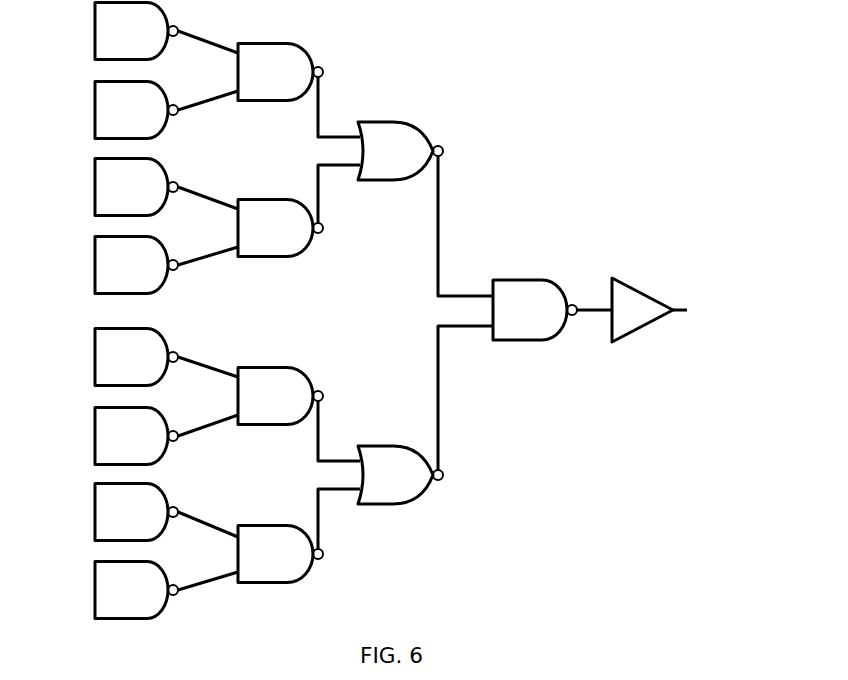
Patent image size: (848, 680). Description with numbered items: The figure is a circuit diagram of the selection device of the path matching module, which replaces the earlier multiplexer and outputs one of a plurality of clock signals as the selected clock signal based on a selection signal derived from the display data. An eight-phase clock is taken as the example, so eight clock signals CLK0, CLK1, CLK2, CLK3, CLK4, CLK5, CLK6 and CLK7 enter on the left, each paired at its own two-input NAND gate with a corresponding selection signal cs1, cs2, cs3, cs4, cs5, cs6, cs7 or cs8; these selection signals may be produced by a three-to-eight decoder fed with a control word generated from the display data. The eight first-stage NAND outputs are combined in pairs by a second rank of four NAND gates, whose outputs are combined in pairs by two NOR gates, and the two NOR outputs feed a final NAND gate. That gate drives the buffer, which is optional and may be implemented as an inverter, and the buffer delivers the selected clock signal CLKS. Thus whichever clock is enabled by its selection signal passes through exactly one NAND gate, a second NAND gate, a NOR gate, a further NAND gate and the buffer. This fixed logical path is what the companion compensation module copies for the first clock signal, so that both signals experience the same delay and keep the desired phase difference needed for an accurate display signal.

The first clock signal CLK0 is at (95, 16).
The clock signal CLK1 is at (95, 95).
The clock signal CLK2 is at (95, 172).
The clock signal CLK3 is at (95, 250).
The clock signal CLK4 is at (95, 342).
The clock signal CLK5 is at (95, 421).
The clock signal CLK6 is at (95, 497).
The clock signal CLK7 is at (95, 575).
The selection signal cs1 is at (95, 45).
The selection signal cs2 is at (95, 124).
The selection signal cs3 is at (95, 201).
The selection signal cs4 is at (95, 279).
The selection signal cs5 is at (95, 371).
The selection signal cs6 is at (95, 450).
The selection signal cs7 is at (95, 526).
The selection signal cs8 is at (95, 604).
The element buffer is at (650, 285).
The selected clock signal CLKS is at (758, 310).